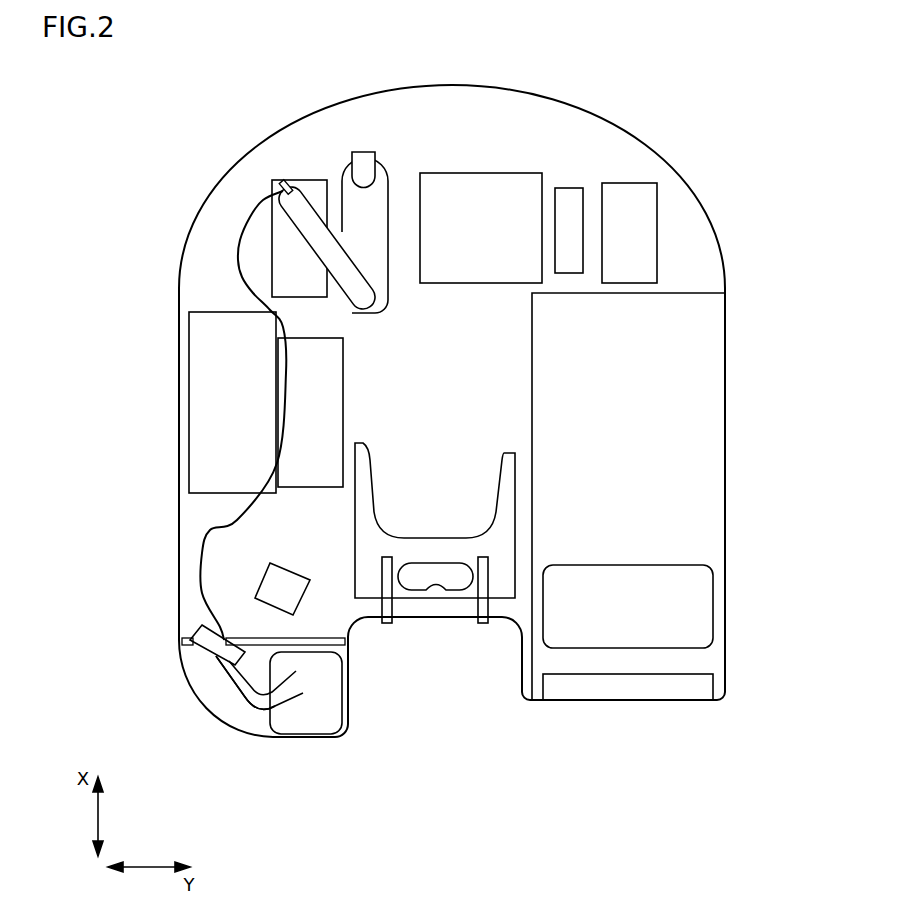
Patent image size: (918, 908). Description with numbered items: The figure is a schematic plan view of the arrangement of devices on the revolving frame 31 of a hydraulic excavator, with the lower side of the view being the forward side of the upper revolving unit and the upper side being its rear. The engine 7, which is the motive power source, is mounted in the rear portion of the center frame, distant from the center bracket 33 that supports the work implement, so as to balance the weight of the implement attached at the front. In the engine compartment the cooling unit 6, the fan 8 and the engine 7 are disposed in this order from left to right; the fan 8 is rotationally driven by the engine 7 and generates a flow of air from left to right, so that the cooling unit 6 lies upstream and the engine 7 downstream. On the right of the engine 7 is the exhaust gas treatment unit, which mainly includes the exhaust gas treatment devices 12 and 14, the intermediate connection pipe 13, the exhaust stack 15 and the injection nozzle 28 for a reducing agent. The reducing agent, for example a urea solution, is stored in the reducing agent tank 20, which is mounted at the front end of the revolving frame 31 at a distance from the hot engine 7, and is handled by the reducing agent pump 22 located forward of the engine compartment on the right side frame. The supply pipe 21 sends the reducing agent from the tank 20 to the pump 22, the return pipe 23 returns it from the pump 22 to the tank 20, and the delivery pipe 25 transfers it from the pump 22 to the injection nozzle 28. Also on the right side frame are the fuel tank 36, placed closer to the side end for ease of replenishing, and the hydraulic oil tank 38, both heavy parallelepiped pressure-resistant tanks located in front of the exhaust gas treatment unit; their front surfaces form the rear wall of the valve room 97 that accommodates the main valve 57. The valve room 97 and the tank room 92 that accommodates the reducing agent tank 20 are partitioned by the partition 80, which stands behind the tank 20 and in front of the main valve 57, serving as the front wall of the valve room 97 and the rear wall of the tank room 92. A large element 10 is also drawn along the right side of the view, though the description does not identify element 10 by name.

The cooling unit 6 is at (627, 207).
The engine 7 is at (475, 193).
The fan 8 is at (570, 203).
The dust box 10 is at (705, 407).
The exhaust gas treatment device 12 is at (285, 245).
The intermediate connection pipe 13 is at (308, 210).
The exhaust gas treatment device 14 is at (373, 210).
The exhaust stack 15 is at (362, 167).
The reducing agent tank 20 is at (305, 720).
The supply pipe 21 is at (225, 683).
The reducing agent pump 22 is at (208, 642).
The return pipe 23 is at (245, 705).
The delivery pipe 25 is at (237, 268).
The injection nozzle 28 is at (284, 184).
The revolving frame 31 is at (447, 503).
The center bracket 33 is at (423, 548).
The fuel tank 36 is at (207, 377).
The hydraulic oil tank 38 is at (313, 417).
The main valve 57 is at (283, 590).
The partition 80 is at (187, 642).
The tank room 92 is at (253, 723).
The valve room 97 is at (207, 513).